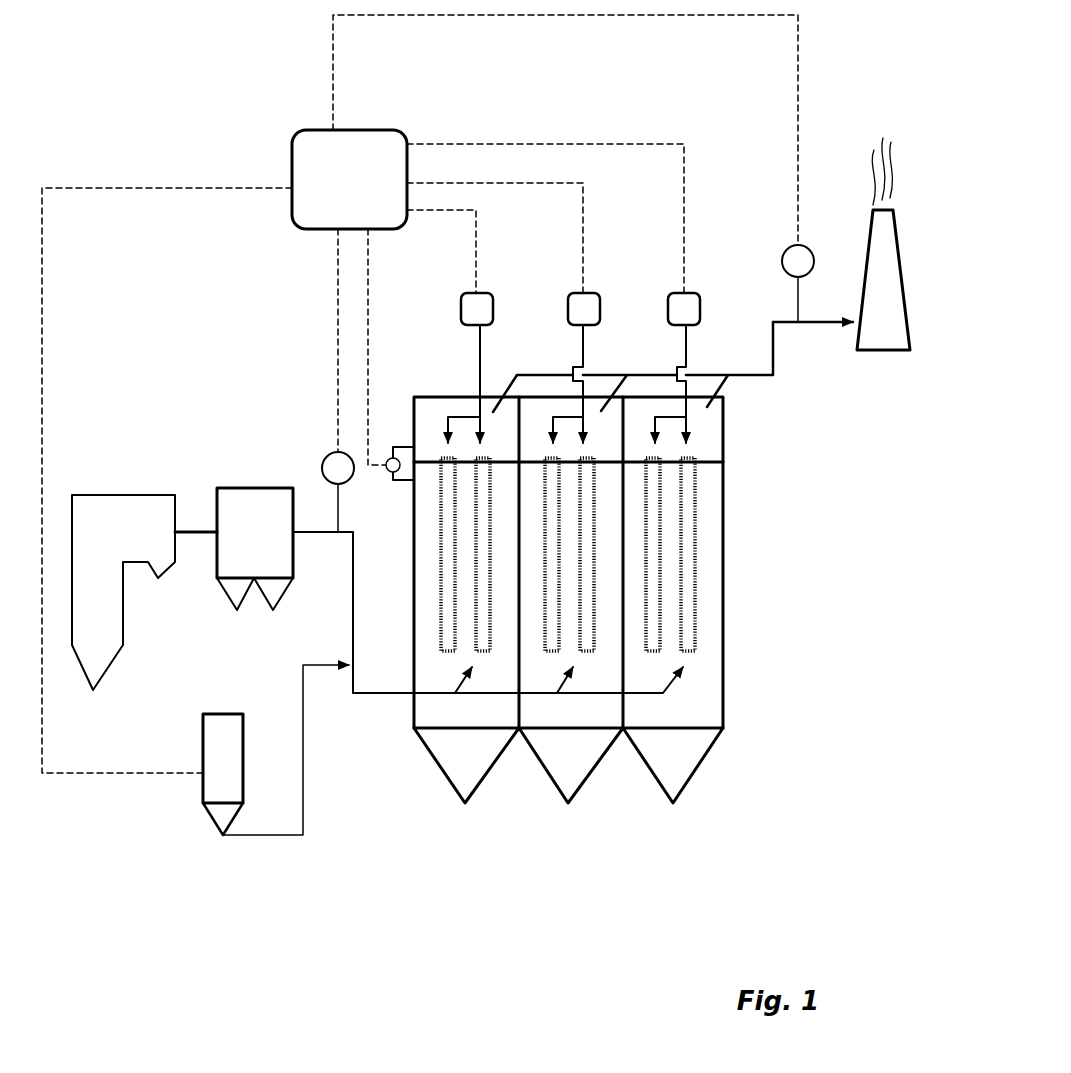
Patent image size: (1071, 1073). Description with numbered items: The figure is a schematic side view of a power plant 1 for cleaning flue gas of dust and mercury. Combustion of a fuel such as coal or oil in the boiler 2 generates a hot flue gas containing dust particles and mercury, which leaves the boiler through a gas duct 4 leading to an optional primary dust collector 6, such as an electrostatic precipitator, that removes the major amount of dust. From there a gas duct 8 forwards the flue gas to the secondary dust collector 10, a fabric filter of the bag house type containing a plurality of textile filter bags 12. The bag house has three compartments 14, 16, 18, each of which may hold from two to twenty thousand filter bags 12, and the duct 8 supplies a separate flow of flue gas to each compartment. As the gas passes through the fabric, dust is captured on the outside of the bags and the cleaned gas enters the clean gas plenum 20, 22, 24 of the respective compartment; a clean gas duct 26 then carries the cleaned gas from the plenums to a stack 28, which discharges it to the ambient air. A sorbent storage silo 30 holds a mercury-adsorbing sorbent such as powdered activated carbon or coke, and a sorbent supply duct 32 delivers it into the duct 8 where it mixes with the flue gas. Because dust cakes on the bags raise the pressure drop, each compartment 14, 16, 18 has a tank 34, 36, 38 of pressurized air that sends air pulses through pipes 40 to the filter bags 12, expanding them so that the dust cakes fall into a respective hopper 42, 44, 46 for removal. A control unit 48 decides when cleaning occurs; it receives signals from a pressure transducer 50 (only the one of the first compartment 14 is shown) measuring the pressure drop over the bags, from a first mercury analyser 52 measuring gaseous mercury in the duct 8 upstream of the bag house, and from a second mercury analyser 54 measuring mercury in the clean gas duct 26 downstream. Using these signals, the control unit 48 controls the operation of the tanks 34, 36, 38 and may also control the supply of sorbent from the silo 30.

The power plant 1 is at (150, 95).
The boiler 2 is at (137, 497).
The gas duct 4 is at (203, 535).
The primary dust collector 6 is at (258, 522).
The gas duct 8 is at (352, 622).
The secondary dust collector 10 is at (750, 573).
The filter bags 12 is at (414, 565).
The first compartment 14 is at (463, 710).
The second compartment 16 is at (590, 717).
The third compartment 18 is at (702, 705).
The clean gas plenum 20 is at (430, 405).
The clean gas plenum 22 is at (557, 405).
The clean gas plenum 24 is at (710, 428).
The clean gas duct 26 is at (825, 325).
The stack 28 is at (862, 260).
The sorbent storage silo 30 is at (203, 790).
The sorbent supply duct 32 is at (303, 765).
The tank 34 is at (493, 312).
The tank 36 is at (600, 312).
The tank 38 is at (702, 310).
The pipes 40 is at (480, 368).
The hopper 42 is at (470, 780).
The hopper 44 is at (573, 783).
The hopper 46 is at (677, 780).
The control unit 48 is at (292, 150).
The pressure transducer 50 is at (391, 474).
The first mercury analyser 52 is at (325, 460).
The second mercury analyser 54 is at (785, 250).